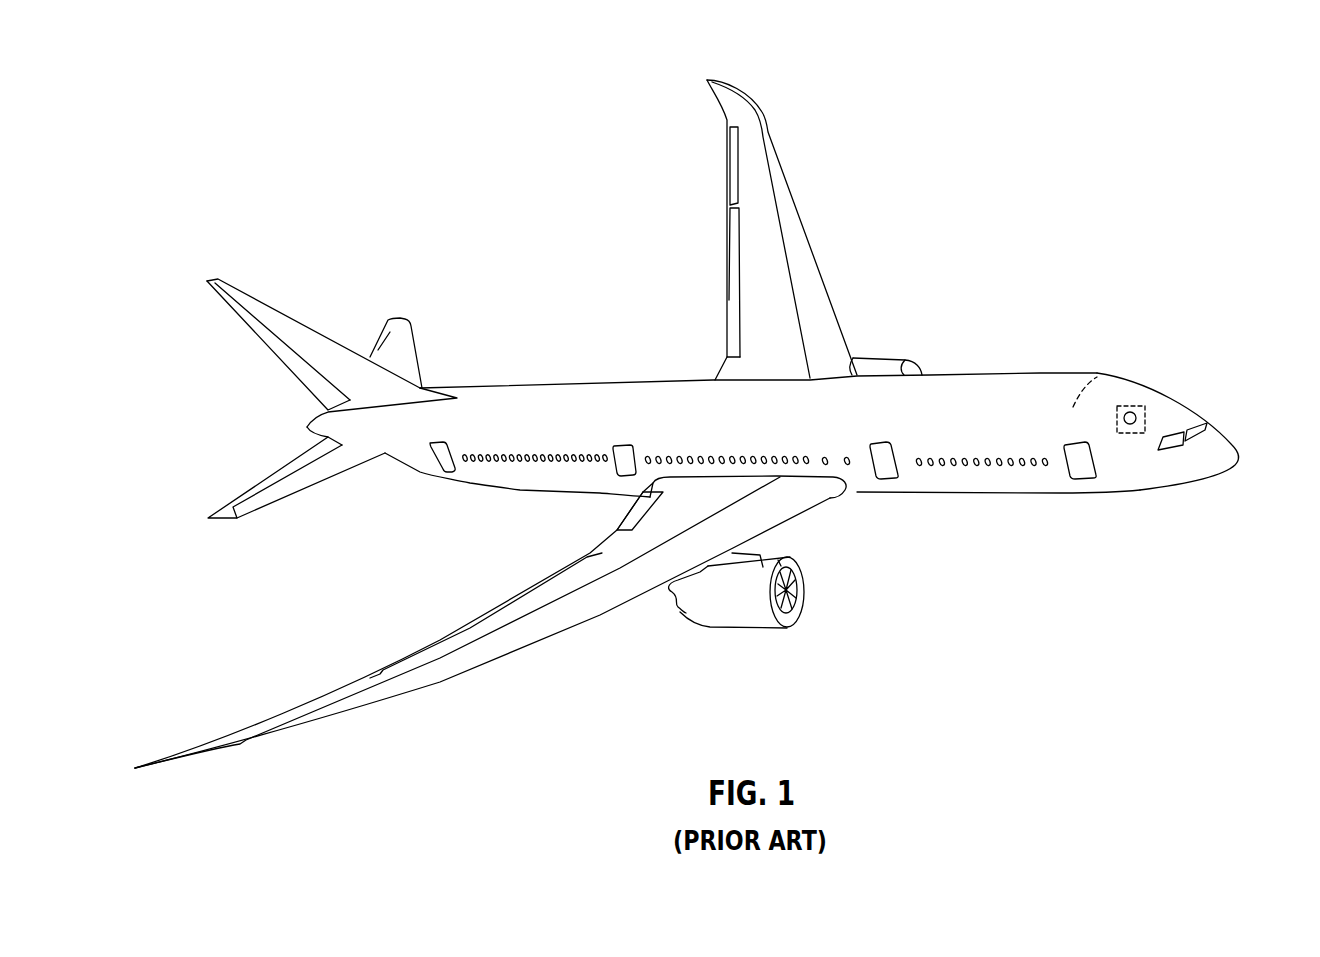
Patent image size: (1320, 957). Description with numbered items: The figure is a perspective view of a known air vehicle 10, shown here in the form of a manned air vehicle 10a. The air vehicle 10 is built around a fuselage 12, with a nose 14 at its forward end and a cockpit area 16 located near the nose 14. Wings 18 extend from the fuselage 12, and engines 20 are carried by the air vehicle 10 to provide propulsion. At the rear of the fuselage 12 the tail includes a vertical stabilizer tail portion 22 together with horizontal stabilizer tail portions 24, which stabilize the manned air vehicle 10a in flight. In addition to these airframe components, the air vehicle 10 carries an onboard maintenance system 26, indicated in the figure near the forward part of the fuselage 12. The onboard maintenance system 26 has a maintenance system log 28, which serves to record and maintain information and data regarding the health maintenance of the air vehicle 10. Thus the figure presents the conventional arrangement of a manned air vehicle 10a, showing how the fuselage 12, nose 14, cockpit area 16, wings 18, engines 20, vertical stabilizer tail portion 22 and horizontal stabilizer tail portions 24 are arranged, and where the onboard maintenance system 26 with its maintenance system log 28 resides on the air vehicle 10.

The air vehicle 10 is at (1012, 186).
The manned air vehicle 10a is at (1052, 303).
The fuselage 12 is at (980, 387).
The nose 14 is at (1218, 463).
The cockpit area 16 is at (1200, 428).
The wings 18 is at (768, 155).
The engines 20 is at (893, 370).
The vertical stabilizer tail portion 22 is at (292, 330).
The horizontal stabilizer tail portions 24 is at (412, 350).
The onboard maintenance system 26 is at (1117, 393).
The maintenance system log 28 is at (1135, 412).